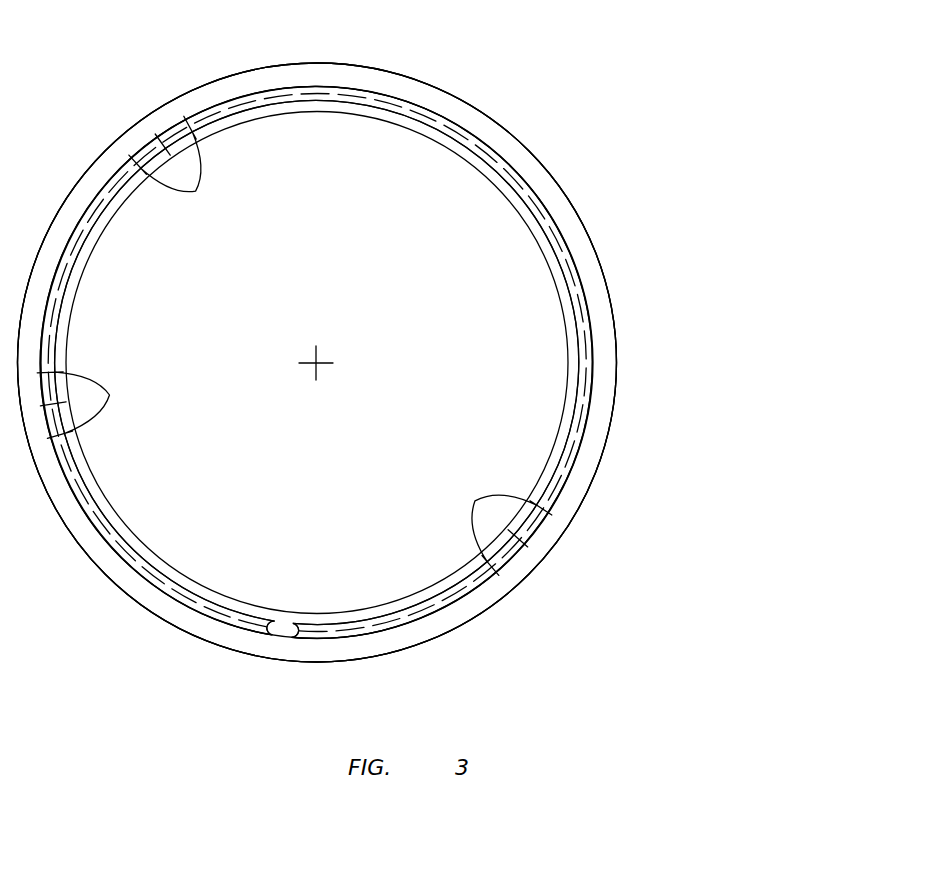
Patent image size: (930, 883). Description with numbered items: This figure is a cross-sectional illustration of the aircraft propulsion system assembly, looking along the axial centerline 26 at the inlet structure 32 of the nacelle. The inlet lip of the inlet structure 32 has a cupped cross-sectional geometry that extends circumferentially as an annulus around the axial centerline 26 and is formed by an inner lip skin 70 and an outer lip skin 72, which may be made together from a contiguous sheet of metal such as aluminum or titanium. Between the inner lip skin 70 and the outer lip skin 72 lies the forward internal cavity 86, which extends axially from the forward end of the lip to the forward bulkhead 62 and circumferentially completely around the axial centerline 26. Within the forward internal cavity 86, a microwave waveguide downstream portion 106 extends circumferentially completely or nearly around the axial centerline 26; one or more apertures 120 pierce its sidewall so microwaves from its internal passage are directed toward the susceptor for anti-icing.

The inlet structure 32 is at (534, 82).
The outer lip skin 72 is at (540, 157).
The forward bulkhead 62 is at (597, 290).
The forward internal cavity 86 is at (580, 244).
The ring gap 106 is at (600, 361).
The inner lip skin 70 is at (500, 199).
The axial centerline 26 is at (314, 366).
The apertures 120 is at (294, 345).